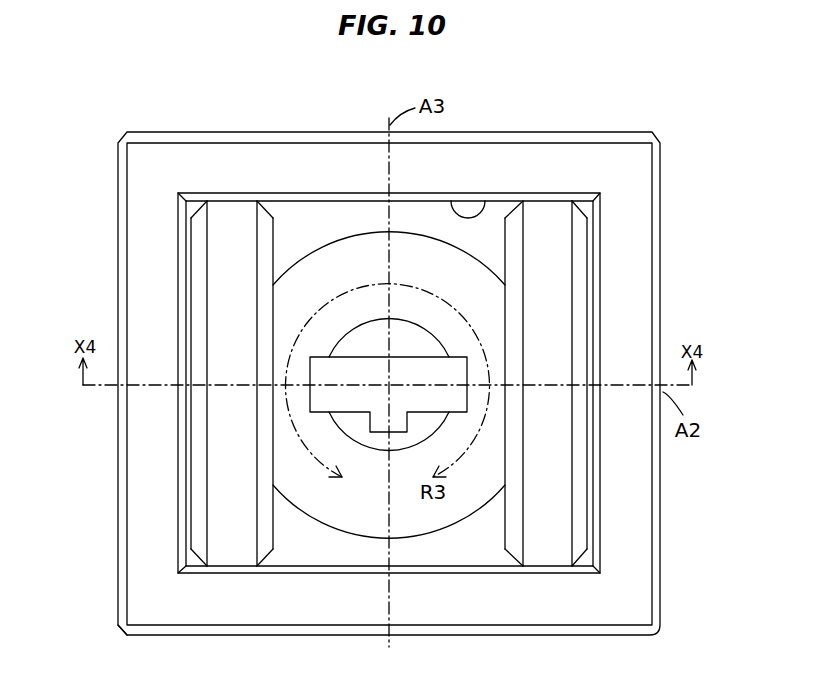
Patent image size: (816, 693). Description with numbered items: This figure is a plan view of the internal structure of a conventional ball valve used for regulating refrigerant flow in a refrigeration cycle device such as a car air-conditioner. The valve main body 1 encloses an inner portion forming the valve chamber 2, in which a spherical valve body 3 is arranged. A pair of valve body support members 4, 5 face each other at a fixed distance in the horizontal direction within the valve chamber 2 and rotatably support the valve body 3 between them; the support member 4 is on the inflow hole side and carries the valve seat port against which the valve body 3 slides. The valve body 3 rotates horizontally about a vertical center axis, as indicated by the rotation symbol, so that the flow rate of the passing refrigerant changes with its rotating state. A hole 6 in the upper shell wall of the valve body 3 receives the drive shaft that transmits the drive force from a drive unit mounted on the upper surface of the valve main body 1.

The valve main body 1 is at (640, 567).
The valve chamber 2 is at (484, 211).
The valve body 3 is at (312, 251).
The valve body support member 4 is at (553, 269).
The valve body support member 5 is at (225, 268).
The hole 6 is at (342, 410).